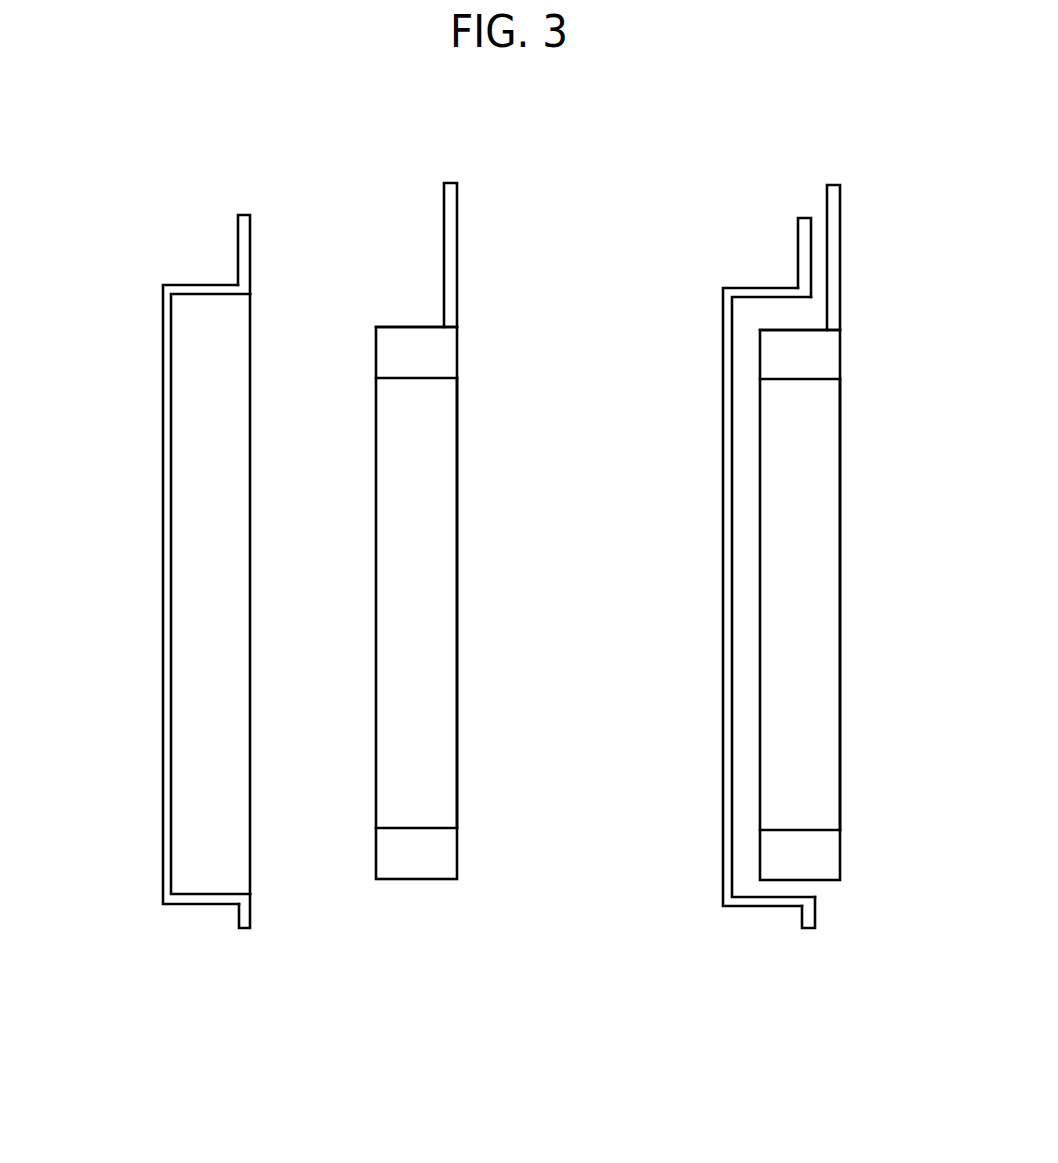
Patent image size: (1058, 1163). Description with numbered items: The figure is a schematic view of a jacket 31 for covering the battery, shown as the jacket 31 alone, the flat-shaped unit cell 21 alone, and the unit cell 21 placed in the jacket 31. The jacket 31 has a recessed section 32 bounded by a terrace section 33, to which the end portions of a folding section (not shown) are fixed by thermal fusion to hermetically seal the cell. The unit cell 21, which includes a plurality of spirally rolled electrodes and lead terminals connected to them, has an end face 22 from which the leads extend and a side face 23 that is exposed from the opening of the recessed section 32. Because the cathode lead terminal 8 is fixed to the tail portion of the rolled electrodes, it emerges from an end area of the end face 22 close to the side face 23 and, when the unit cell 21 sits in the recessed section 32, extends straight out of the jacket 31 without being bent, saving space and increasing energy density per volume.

The cathode lead terminal 8 is at (455, 253).
The flat-shaped unit cell 21 is at (417, 605).
The end face 22 is at (398, 326).
The side face 23 is at (457, 508).
The jacket 31 is at (167, 735).
The recessed section 32 is at (197, 865).
The terrace section 33 is at (248, 260).